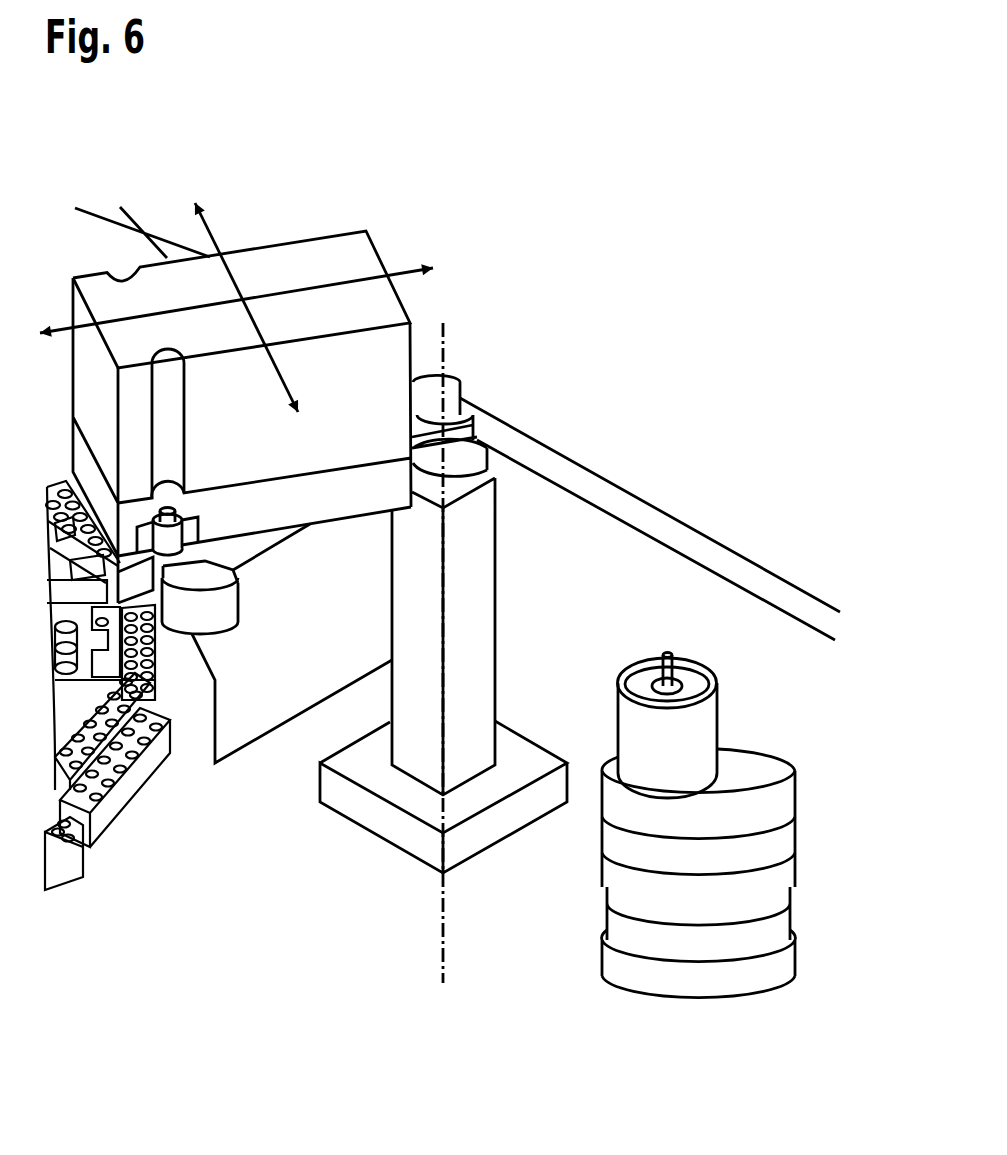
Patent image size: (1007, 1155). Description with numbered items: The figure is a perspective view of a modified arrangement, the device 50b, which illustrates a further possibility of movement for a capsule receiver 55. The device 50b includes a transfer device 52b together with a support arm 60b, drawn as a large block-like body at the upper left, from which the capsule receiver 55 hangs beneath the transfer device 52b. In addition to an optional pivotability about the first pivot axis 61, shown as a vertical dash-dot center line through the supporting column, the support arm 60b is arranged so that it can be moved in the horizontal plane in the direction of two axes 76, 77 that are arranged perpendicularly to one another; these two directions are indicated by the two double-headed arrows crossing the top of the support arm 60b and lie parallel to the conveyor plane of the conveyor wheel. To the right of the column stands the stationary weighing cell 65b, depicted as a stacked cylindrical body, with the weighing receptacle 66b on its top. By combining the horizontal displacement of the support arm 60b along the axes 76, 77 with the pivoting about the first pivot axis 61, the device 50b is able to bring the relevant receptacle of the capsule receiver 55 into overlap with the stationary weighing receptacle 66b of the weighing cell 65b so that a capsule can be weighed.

The device 50b is at (562, 308).
The transfer device 52b is at (289, 602).
The capsule receiver 55 is at (192, 617).
The support arm 60b is at (322, 257).
The first pivot axis 61 is at (443, 951).
The weighing cell 65b is at (702, 756).
The weighing receptacle 66b is at (697, 687).
The axis 76 is at (232, 260).
The axis 77 is at (402, 272).